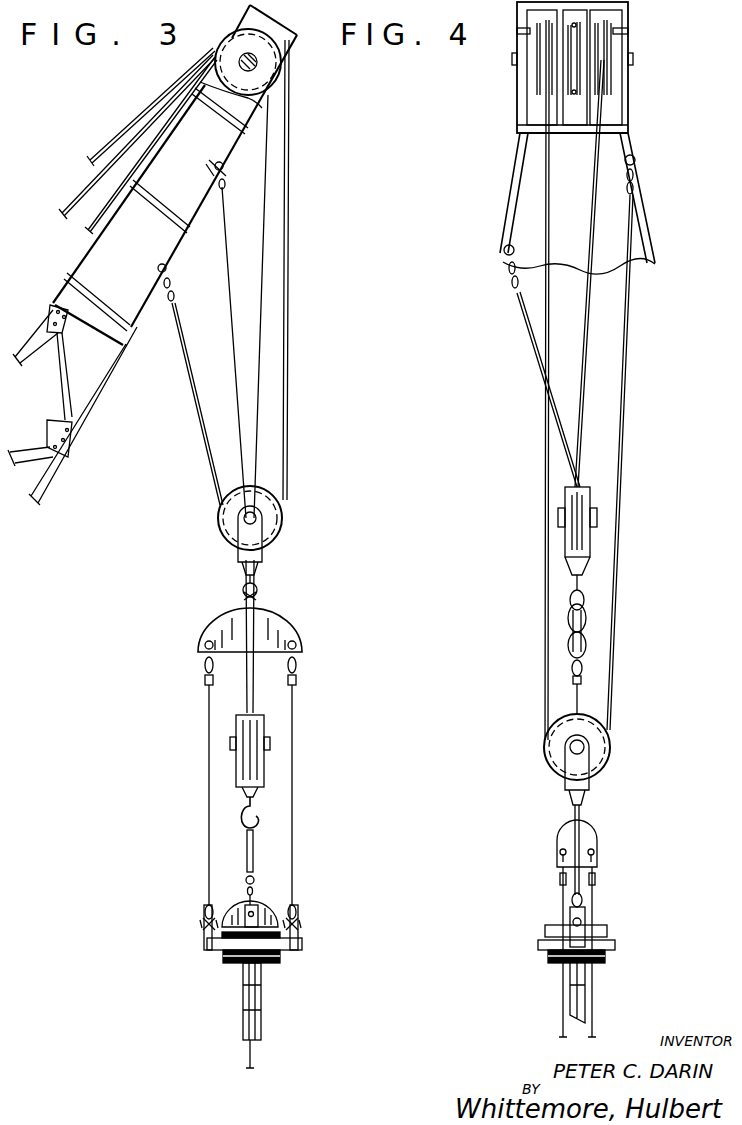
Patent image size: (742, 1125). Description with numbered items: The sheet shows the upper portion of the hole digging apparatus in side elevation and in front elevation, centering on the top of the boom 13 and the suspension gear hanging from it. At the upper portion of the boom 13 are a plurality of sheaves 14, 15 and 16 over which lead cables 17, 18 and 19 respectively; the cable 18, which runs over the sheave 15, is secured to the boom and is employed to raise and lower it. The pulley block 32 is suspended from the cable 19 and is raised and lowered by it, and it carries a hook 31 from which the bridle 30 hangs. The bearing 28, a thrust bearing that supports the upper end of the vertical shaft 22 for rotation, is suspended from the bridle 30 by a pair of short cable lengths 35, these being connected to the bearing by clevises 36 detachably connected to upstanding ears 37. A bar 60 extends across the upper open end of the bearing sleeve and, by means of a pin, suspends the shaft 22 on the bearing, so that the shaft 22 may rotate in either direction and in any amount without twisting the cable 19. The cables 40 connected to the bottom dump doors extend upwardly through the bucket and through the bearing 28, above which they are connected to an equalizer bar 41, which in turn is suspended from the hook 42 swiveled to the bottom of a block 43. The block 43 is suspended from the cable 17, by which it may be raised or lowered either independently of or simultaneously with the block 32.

In FIG. 3, the boom 13 is at (102, 392).
In FIG. 4, the boom 13 is at (653, 236).
In FIG. 3, the sheave 14 is at (240, 36).
In FIG. 4, the sheave 14 is at (536, 78).
In FIG. 4, the sheave 15 is at (578, 97).
In FIG. 4, the sheave 16 is at (612, 45).
In FIG. 3, the cable 17 is at (116, 140).
In FIG. 4, the cable 17 is at (546, 472).
In FIG. 3, the cable 18 is at (68, 206).
In FIG. 3, the cable 19 is at (88, 229).
In FIG. 4, the cable 19 is at (552, 403).
In FIG. 3, the vertical shaft 22 is at (256, 996).
In FIG. 4, the vertical shaft 22 is at (580, 991).
In FIG. 3, the thrust bearing 28 is at (216, 965).
In FIG. 4, the thrust bearing 28 is at (616, 924).
In FIG. 3, the bridle 30 is at (290, 637).
In FIG. 4, the bridle 30 is at (582, 636).
In FIG. 3, the hook 31 is at (263, 590).
In FIG. 4, the hook 31 is at (588, 585).
In FIG. 3, the pulley block 32 is at (262, 543).
In FIG. 4, the pulley block 32 is at (565, 540).
In FIG. 3, the short cable lengths 35 is at (208, 712).
In FIG. 4, the short cable lengths 35 is at (583, 702).
In FIG. 3, the clevises 36 is at (204, 915).
In FIG. 3, the upstanding ears 37 is at (207, 942).
In FIG. 3, the cables 40 is at (257, 1056).
In FIG. 4, the cables 40 is at (562, 992).
In FIG. 3, the equalizer bar 41 is at (254, 848).
In FIG. 4, the equalizer bar 41 is at (597, 838).
In FIG. 3, the hook 42 is at (246, 826).
In FIG. 4, the hook 42 is at (585, 814).
In FIG. 3, the block 43 is at (238, 765).
In FIG. 4, the block 43 is at (596, 752).
In FIG. 3, the bar 60 is at (237, 912).